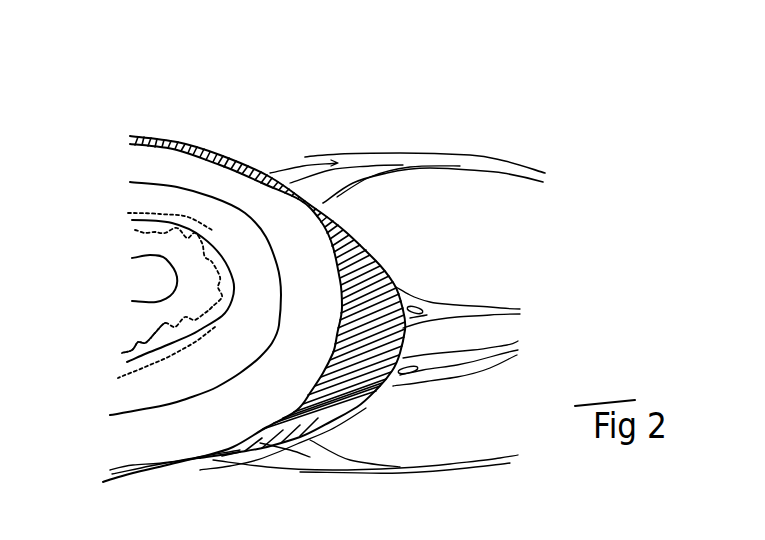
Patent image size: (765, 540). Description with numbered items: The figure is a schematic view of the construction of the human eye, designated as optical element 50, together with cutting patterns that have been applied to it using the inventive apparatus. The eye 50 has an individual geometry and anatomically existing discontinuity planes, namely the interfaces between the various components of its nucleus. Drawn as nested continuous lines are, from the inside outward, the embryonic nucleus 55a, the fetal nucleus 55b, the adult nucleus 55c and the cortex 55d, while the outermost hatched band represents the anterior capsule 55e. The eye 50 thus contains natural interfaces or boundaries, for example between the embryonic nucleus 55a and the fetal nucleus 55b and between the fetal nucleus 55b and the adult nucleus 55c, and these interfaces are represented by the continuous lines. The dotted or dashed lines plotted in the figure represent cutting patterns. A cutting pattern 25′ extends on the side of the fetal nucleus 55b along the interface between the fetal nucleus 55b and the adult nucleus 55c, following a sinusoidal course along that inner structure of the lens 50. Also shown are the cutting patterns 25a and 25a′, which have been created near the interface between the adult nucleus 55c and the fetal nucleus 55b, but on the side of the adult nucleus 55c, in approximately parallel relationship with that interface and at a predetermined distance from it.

The optical element 50 is at (218, 133).
The anterior capsule 55e is at (128, 135).
The cortex 55d is at (137, 162).
The adult nucleus 55c is at (128, 199).
The fetal nucleus 55b is at (128, 243).
The embryonic nucleus 55a is at (142, 280).
The cutting pattern 25a is at (150, 210).
The cutting pattern 25a′ is at (117, 377).
The cutting pattern 25′ is at (127, 348).